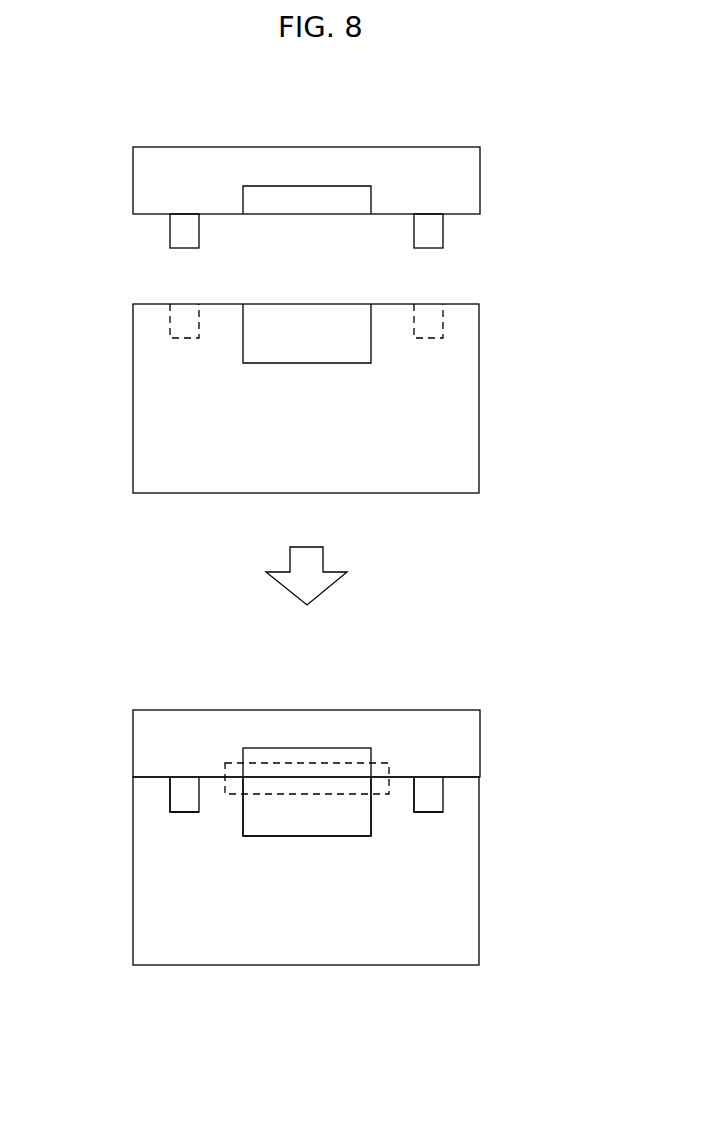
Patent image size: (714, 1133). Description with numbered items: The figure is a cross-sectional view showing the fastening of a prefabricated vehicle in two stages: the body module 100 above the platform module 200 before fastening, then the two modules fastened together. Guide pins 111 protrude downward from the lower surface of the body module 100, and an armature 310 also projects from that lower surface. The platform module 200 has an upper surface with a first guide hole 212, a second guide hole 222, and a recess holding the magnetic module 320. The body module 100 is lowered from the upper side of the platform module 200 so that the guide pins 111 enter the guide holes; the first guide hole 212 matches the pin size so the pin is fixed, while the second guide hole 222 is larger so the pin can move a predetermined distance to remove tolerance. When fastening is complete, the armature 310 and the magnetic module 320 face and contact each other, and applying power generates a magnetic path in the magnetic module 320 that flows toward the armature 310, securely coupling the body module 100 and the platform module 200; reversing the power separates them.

The body module 100 is at (413, 162).
The guide pin 111 is at (435, 232).
The platform module 200 is at (485, 442).
The first guide hole 212 is at (185, 797).
The second guide hole 222 is at (444, 328).
The armature 310 is at (293, 190).
The magnetic module 320 is at (265, 347).